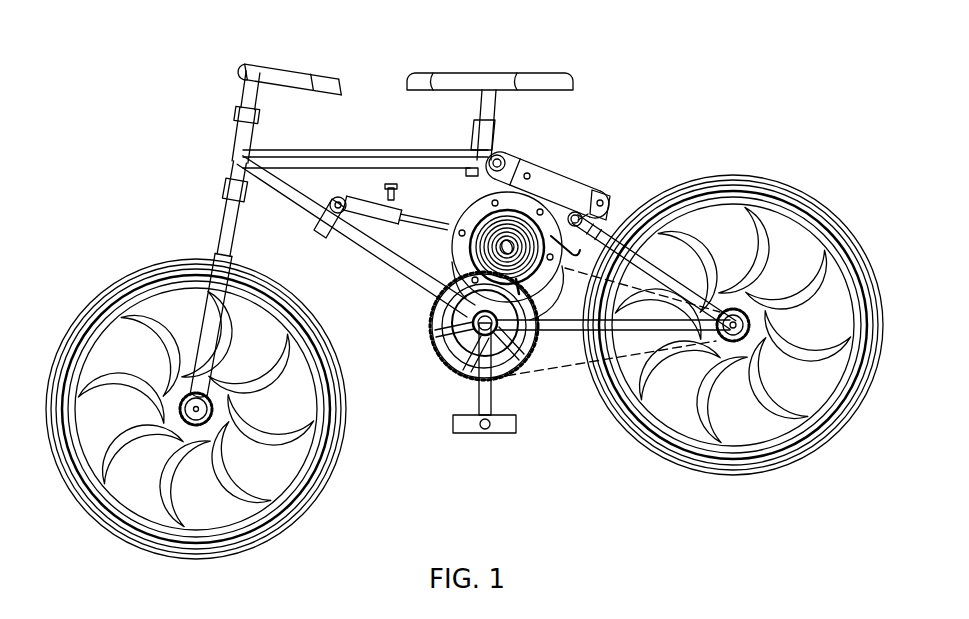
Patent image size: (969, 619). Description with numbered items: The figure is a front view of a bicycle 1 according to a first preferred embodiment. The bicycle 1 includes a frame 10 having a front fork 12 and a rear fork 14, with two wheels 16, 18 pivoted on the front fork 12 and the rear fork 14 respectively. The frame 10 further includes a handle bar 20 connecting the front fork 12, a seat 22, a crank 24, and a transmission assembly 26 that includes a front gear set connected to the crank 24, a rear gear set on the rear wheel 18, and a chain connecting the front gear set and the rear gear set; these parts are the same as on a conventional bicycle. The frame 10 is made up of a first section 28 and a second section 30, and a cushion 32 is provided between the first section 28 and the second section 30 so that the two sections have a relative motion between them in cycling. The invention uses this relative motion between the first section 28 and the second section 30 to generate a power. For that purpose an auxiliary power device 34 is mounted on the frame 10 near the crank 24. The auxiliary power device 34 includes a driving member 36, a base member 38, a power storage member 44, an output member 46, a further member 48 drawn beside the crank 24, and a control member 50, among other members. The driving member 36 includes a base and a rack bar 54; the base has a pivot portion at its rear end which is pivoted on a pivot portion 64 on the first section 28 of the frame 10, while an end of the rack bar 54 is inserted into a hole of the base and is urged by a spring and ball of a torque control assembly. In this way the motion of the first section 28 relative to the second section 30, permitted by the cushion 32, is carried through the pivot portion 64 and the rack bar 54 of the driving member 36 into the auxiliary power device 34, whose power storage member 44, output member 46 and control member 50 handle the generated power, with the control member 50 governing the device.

The bicycle 1 is at (693, 103).
The frame 10 is at (360, 140).
The front fork 12 is at (228, 232).
The rear fork 14 is at (667, 288).
The wheel 16 is at (80, 325).
The rear wheel 18 is at (836, 422).
The handle bar 20 is at (282, 73).
The seat 22 is at (487, 78).
The crank 24 is at (500, 433).
The transmission assembly 26 is at (536, 386).
The first section 28 is at (365, 244).
The second section 30 is at (572, 258).
The cushion 32 is at (513, 160).
The auxiliary power device 34 is at (456, 193).
The driving member 36 is at (360, 228).
The base member 38 is at (528, 220).
The power storage member 44 is at (440, 338).
The output member 46 is at (437, 252).
The chainring 48 is at (472, 370).
The control member 50 is at (606, 228).
The rack bar 54 is at (428, 222).
The pivot portion 64 is at (322, 208).